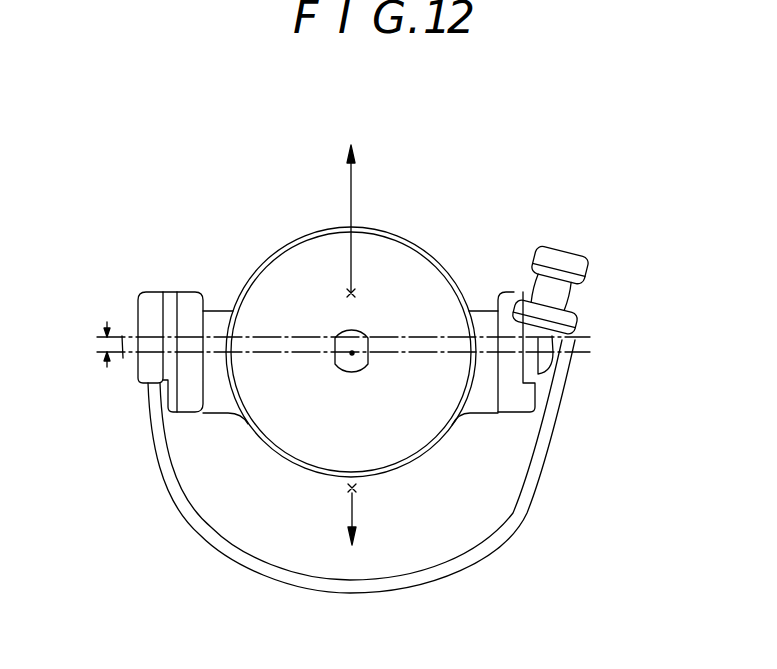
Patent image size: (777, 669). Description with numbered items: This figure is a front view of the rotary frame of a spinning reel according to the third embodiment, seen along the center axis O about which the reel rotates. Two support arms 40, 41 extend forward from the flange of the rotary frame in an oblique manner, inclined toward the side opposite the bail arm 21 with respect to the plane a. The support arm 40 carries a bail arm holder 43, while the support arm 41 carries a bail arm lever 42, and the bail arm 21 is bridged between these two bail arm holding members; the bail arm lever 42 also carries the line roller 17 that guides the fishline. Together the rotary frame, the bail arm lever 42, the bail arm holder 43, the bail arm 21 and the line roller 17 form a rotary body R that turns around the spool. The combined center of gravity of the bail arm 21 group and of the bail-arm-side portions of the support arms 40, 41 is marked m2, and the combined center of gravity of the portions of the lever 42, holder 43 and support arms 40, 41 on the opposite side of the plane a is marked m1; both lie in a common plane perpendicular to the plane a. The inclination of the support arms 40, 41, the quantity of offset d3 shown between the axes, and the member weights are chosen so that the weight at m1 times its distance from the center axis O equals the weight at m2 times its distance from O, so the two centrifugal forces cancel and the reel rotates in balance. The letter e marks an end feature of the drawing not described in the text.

The line roller 17 is at (570, 297).
The bail arm 21 is at (263, 568).
The support arm 40 is at (195, 303).
The support arm 41 is at (517, 397).
The bail arm lever 42 is at (545, 352).
The bail arm holder 43 is at (148, 393).
The rotary body R is at (263, 245).
The center axis O is at (353, 352).
The combined center of gravity m1 is at (372, 227).
The combined center of gravity m2 is at (374, 512).
The end face e is at (122, 336).
The plane a is at (123, 358).
The quantity of offset d3 is at (89, 344).